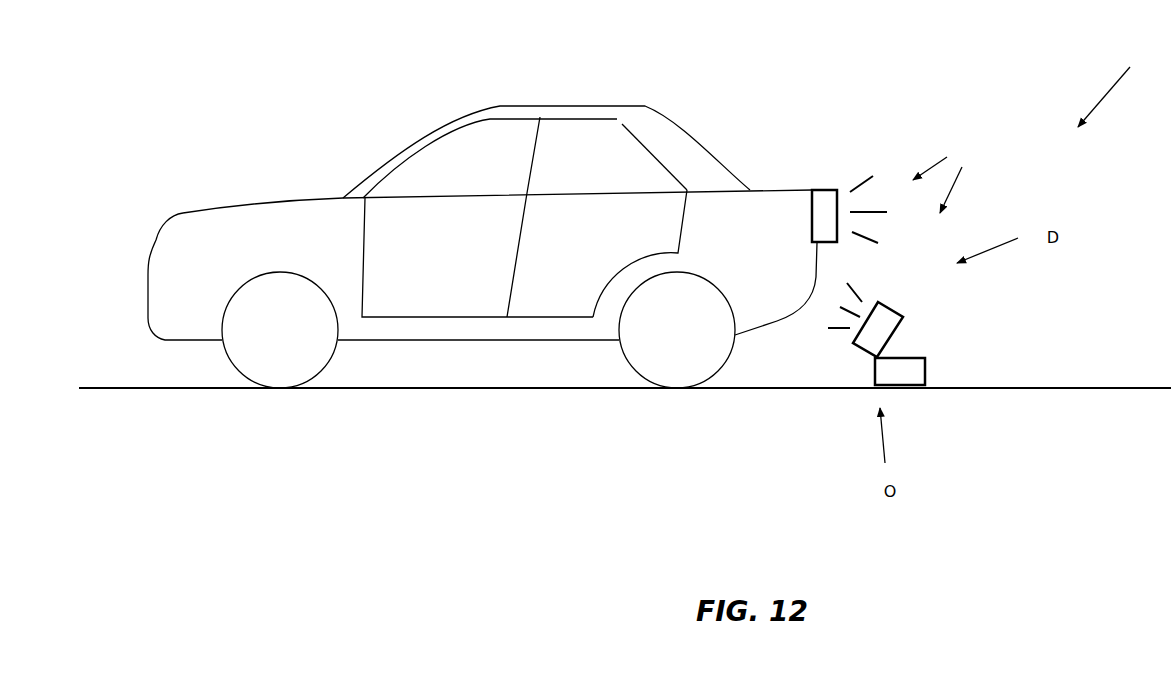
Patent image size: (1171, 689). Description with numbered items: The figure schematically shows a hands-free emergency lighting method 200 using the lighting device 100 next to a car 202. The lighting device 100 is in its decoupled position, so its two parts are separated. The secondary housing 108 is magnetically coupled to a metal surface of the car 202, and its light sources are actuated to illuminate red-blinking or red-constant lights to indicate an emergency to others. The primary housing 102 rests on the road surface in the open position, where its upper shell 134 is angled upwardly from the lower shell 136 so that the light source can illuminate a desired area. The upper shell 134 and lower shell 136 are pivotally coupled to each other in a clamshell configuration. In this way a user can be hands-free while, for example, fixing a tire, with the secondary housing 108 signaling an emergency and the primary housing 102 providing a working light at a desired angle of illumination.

The hands-free emergency lighting method 200 is at (1117, 83).
The car 202 is at (455, 68).
The secondary housing 108 is at (813, 190).
The lighting device 100 is at (949, 169).
The primary housing 102 is at (943, 342).
The upper shell 134 is at (860, 353).
The lower shell 136 is at (923, 370).